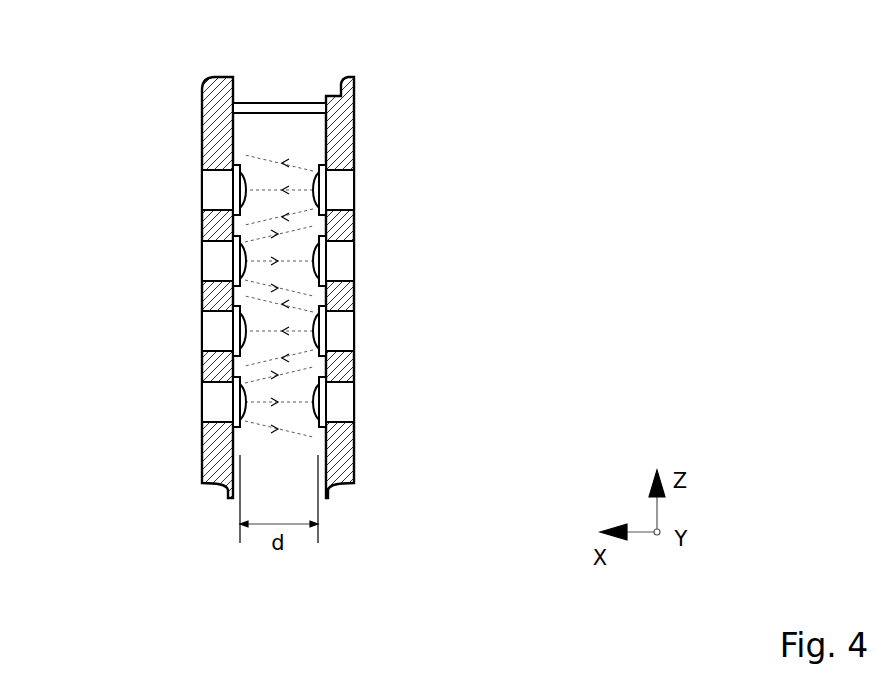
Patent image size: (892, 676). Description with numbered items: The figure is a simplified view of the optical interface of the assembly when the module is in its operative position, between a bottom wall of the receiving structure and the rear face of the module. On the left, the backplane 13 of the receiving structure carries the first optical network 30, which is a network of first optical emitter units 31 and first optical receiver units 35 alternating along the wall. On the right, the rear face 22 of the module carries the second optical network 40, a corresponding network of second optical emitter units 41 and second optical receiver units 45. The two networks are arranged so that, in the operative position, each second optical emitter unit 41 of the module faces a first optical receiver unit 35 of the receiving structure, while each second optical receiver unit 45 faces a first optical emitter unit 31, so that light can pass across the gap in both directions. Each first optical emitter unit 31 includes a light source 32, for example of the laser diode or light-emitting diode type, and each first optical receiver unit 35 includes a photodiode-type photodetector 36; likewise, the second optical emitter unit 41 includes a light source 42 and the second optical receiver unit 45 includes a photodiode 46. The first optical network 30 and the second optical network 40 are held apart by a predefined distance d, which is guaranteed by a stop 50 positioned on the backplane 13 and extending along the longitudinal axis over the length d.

The backplane 13 is at (213, 117).
The rear face 22 is at (345, 130).
The stop 50 is at (270, 112).
The first optical network 30 is at (103, 173).
The first optical emitter unit 31 is at (190, 261).
The light source 32 is at (243, 414).
The first optical receiver unit 35 is at (190, 190).
The photodetector 36 is at (244, 182).
The second optical network 40 is at (455, 171).
The second optical emitter unit 41 is at (368, 190).
The light source 42 is at (314, 180).
The second optical receiver unit 45 is at (368, 261).
The photodiode 46 is at (313, 408).